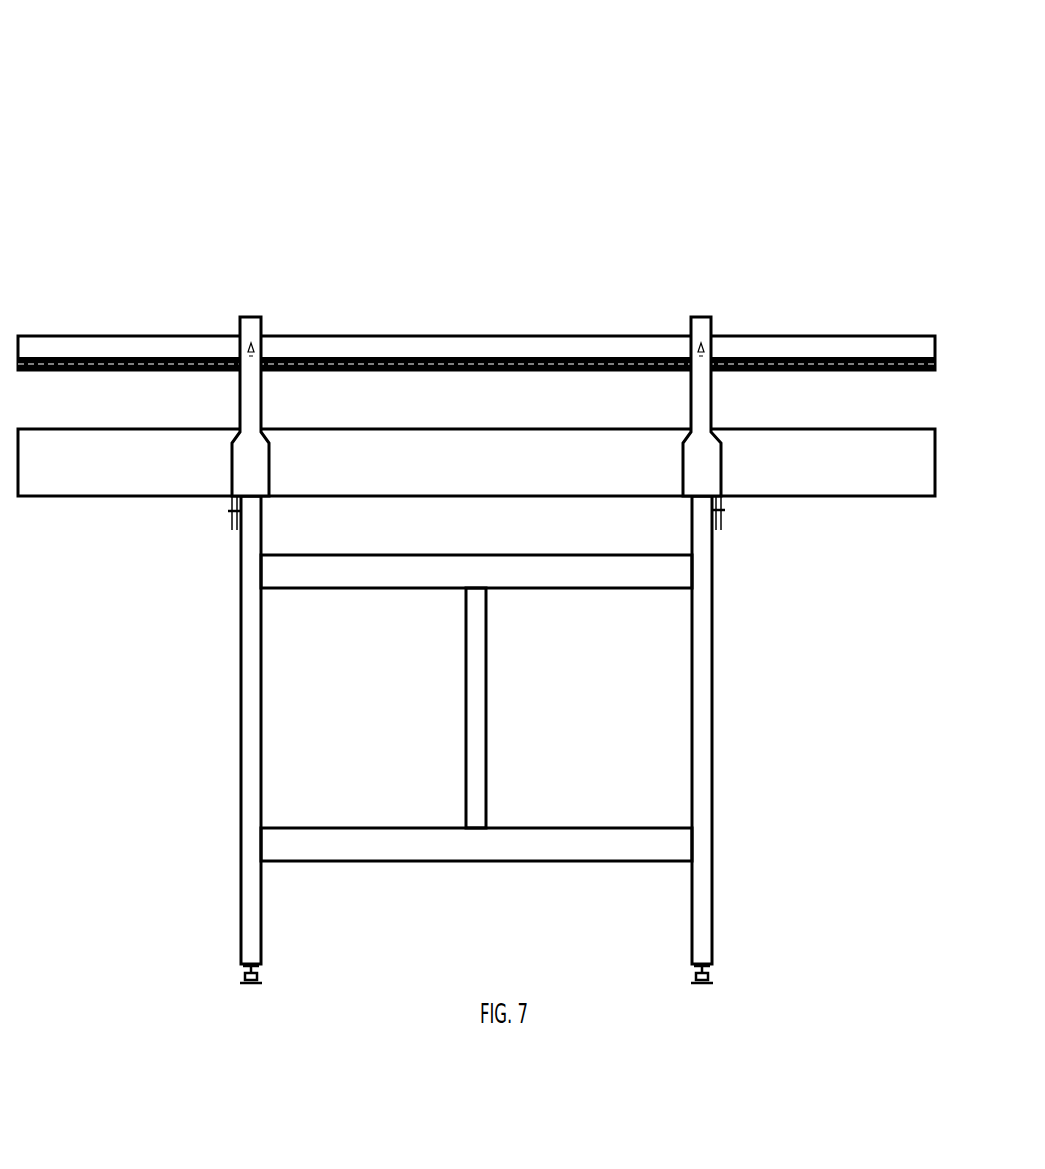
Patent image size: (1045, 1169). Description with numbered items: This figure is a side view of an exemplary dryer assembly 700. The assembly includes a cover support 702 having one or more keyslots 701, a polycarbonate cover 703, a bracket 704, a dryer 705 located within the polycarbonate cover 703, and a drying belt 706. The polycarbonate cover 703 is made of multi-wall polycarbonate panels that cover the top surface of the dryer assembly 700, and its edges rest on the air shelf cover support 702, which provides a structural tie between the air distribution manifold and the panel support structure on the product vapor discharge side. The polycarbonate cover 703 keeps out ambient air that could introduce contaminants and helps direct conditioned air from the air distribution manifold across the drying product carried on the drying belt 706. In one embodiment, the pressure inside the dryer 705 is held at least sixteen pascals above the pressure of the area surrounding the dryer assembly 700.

The dryer assembly 700 is at (476, 495).
The keyslot 701 is at (257, 316).
The cover support 702 is at (297, 322).
The polycarbonate cover 703 is at (334, 350).
The bracket 704 is at (718, 318).
The dryer 705 is at (580, 422).
The drying belt 706 is at (131, 490).